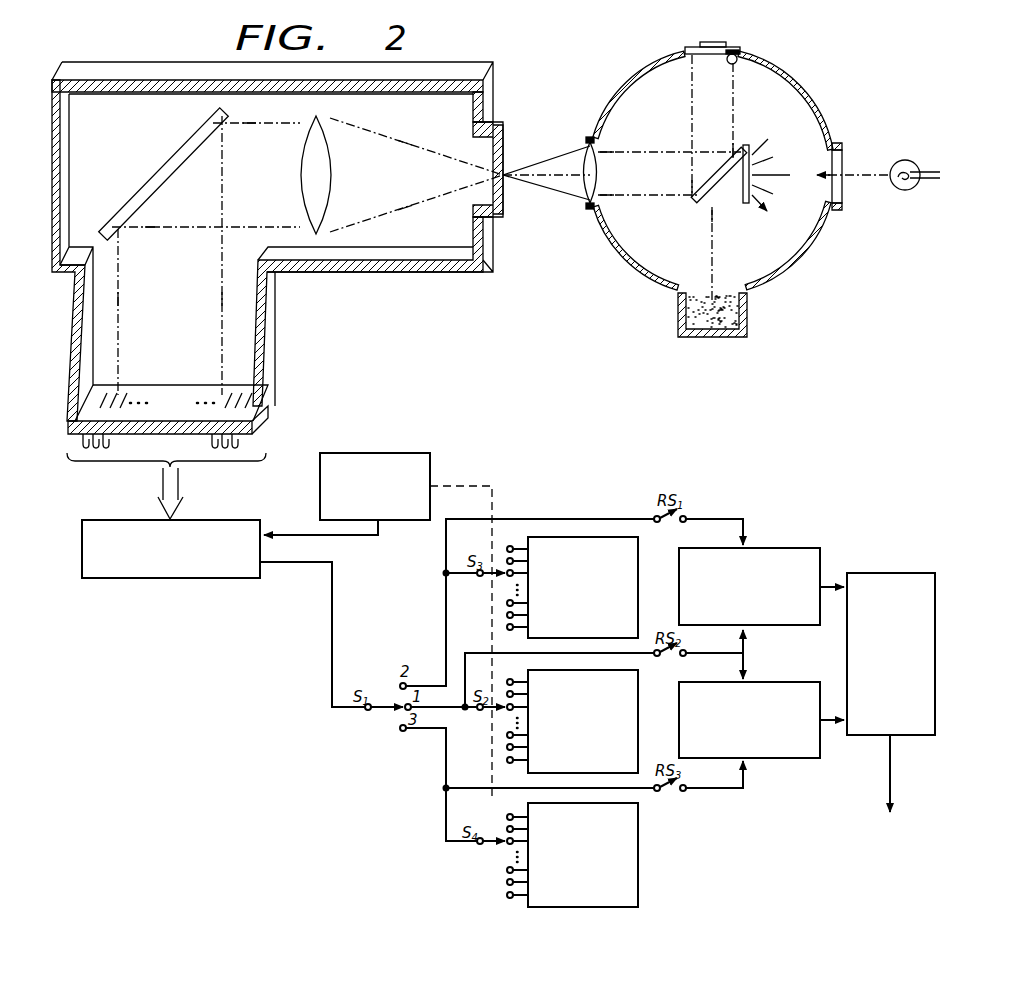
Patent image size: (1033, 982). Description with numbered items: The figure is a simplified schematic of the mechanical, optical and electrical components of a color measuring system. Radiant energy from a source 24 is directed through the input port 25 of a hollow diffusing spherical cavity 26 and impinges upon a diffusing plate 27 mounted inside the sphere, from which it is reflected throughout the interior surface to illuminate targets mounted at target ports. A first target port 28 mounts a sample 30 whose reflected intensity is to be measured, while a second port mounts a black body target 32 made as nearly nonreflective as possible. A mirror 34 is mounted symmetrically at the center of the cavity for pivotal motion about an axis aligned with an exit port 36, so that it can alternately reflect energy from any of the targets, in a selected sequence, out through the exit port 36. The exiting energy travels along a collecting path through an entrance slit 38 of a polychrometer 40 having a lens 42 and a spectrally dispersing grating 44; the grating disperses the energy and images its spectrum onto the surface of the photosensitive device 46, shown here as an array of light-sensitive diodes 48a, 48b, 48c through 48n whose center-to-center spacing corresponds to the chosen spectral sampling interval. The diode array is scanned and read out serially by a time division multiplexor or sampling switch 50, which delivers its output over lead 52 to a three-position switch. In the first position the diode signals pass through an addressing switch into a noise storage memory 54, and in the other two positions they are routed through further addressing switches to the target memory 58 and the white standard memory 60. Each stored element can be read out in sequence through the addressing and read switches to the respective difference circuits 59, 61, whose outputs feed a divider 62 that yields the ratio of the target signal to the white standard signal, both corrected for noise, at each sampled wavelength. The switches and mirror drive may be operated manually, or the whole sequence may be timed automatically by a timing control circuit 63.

The source 24 is at (907, 160).
The input port 25 is at (840, 150).
The hollow diffusing spherical cavity 26 is at (806, 73).
The diffusing plate 27 is at (747, 204).
The first target port 28 is at (742, 52).
The sample 30 is at (715, 43).
The black body target 32 is at (735, 321).
The mirror 34 is at (694, 201).
The exit port 36 is at (597, 178).
The entrance slit 38 is at (505, 174).
The polychrometer 40 is at (508, 88).
The lens 42 is at (322, 171).
The spectrally dispersing grating 44 is at (158, 178).
The photosensitive device 46 is at (194, 372).
The light-sensitive diode 48a is at (98, 407).
The light-sensitive diode 48b is at (104, 418).
The light-sensitive diode 48c is at (121, 398).
The light-sensitive diode 48n is at (250, 406).
The sampling switch 50 is at (106, 520).
The lead 52 is at (332, 637).
The noise storage memory 54 is at (638, 700).
The target memory 58 is at (578, 537).
The difference circuit 59 is at (778, 548).
The white standard memory 60 is at (638, 841).
The difference circuit 61 is at (770, 758).
The divider 62 is at (898, 573).
The timing control circuit 63 is at (363, 452).